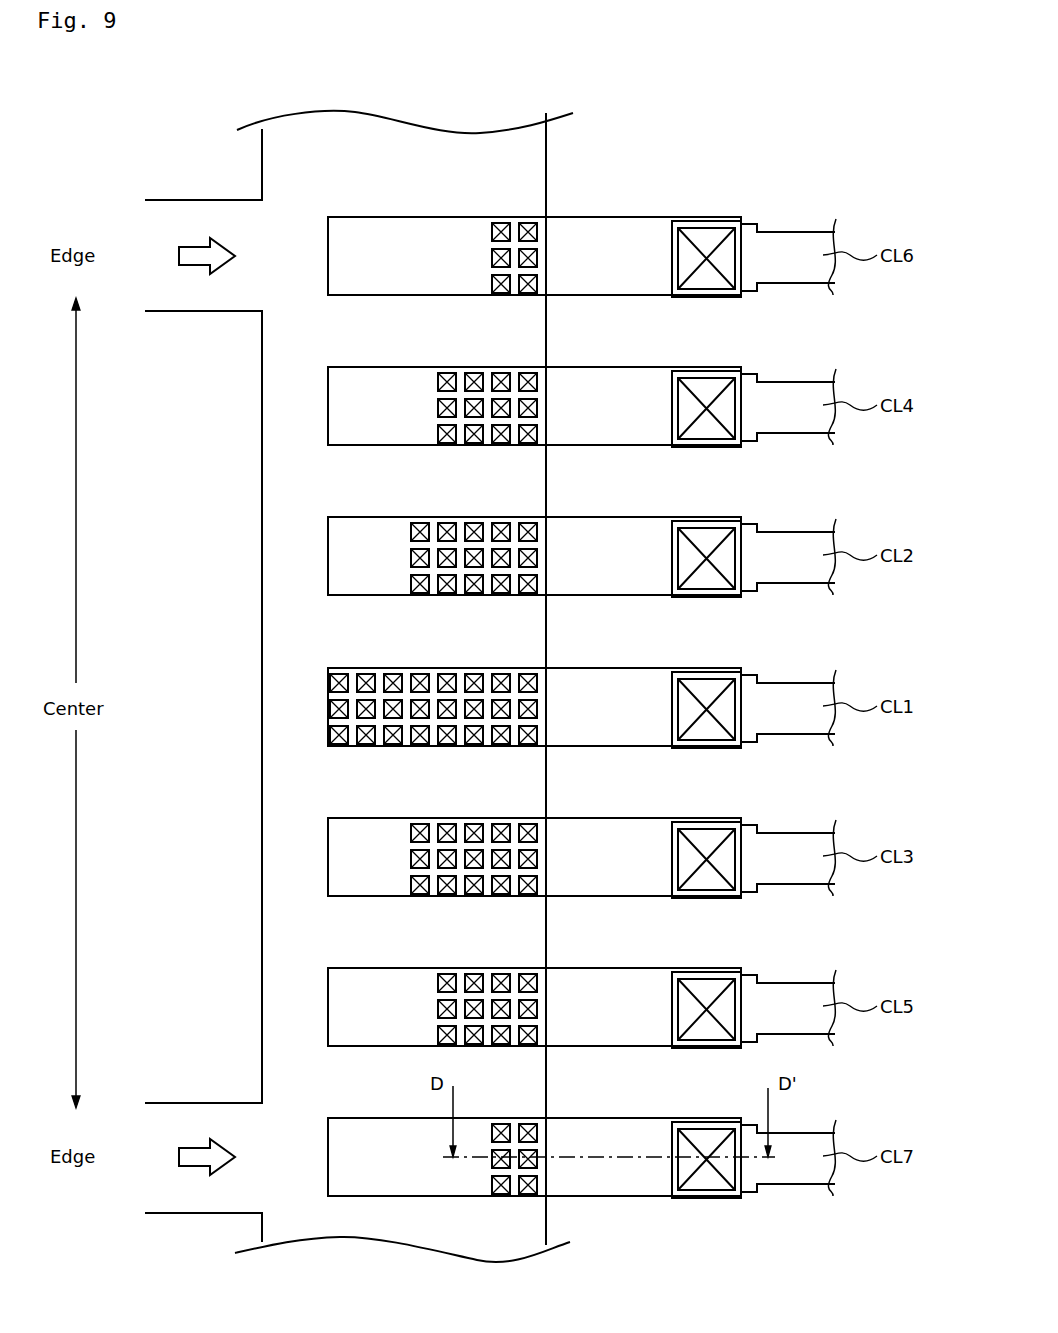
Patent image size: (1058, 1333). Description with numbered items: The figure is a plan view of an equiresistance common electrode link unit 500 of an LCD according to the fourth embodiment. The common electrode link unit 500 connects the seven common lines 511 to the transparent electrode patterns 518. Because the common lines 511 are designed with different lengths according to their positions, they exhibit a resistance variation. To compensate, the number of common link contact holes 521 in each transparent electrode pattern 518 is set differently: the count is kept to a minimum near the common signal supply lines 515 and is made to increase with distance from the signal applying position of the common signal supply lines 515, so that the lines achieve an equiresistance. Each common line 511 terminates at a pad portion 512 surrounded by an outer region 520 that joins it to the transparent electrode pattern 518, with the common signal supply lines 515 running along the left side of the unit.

The common electrode link unit 500 is at (647, 133).
The common lines 511 is at (790, 237).
The bonding pad 512 is at (704, 221).
The common signal supply lines 515 is at (262, 451).
The transparent electrode patterns 518 is at (600, 217).
The pad region 520 is at (682, 253).
The common link contact holes 521 is at (421, 227).